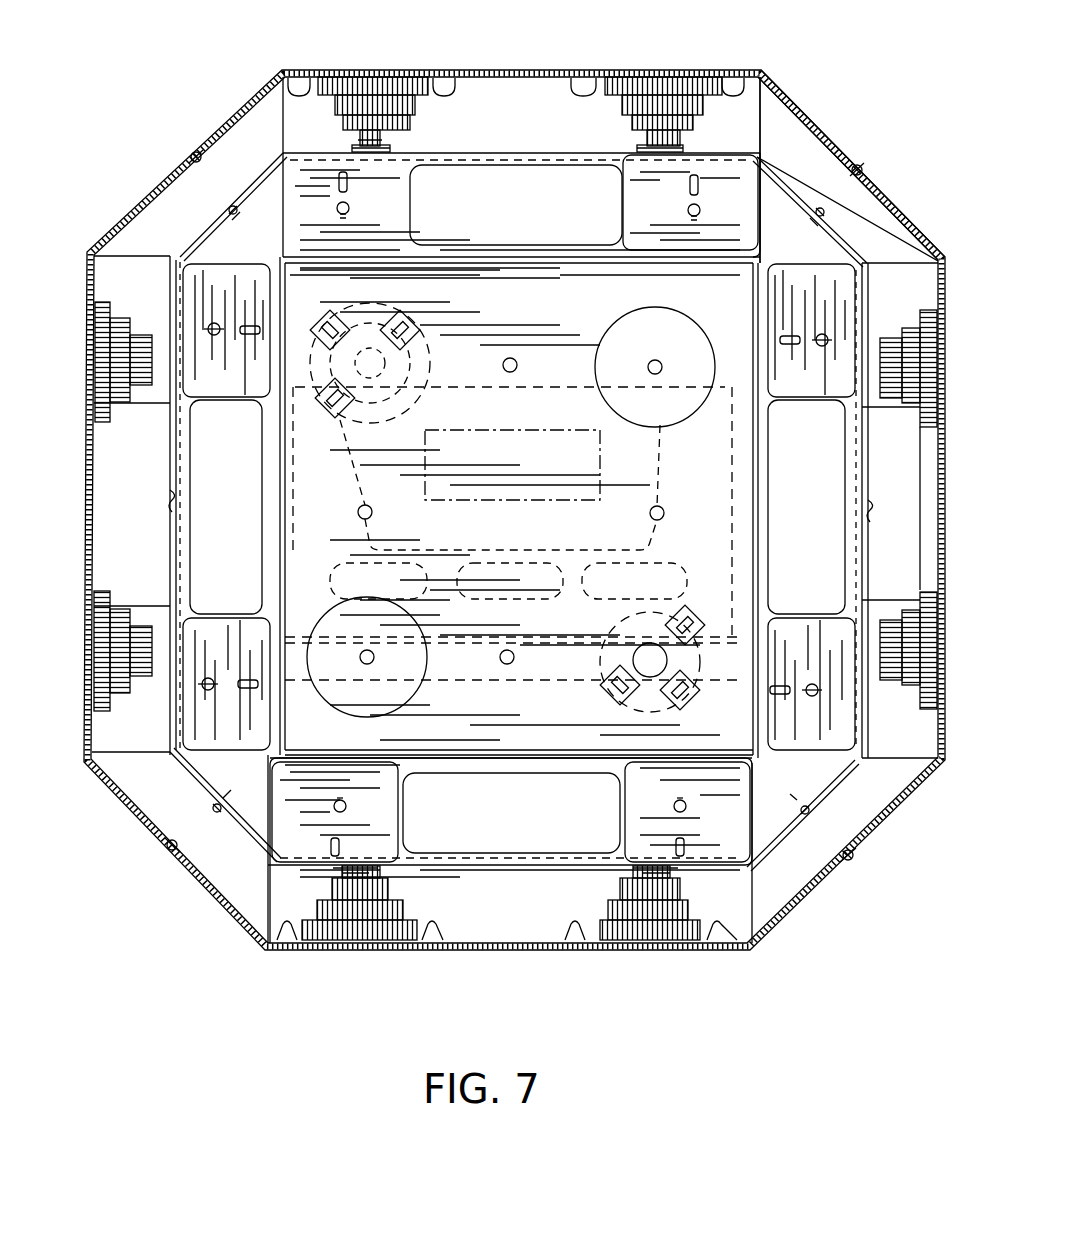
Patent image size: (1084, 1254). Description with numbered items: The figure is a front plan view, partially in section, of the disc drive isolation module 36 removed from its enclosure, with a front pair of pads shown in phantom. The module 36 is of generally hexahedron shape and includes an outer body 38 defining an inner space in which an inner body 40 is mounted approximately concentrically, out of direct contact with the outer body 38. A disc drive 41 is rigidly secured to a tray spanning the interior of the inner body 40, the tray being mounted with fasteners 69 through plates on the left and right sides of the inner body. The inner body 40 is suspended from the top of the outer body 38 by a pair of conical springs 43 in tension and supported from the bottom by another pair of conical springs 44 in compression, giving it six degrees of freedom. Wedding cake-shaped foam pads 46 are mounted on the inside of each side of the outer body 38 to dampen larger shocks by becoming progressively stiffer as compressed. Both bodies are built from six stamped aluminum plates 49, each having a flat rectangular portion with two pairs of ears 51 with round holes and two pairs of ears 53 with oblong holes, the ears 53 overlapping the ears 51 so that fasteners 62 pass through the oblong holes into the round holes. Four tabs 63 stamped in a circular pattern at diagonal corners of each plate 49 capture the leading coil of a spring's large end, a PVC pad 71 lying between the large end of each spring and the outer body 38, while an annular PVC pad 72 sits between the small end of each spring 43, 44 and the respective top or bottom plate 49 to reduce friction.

The disc drive isolation module 36 is at (573, 50).
The outer body 38 is at (795, 118).
The inner body 40 is at (810, 182).
The disc drive 41 is at (535, 387).
The conical springs 43 is at (390, 142).
The conical springs 44 is at (380, 900).
The foam pads 46 is at (335, 105).
The plate 49 is at (540, 152).
The ears 51 is at (238, 117).
The ears 53 is at (157, 177).
The fasteners 62 is at (195, 152).
The tabs 63 is at (345, 317).
The fasteners 69 is at (168, 502).
The PVC pad 71 is at (470, 90).
The PVC pad 72 is at (357, 142).